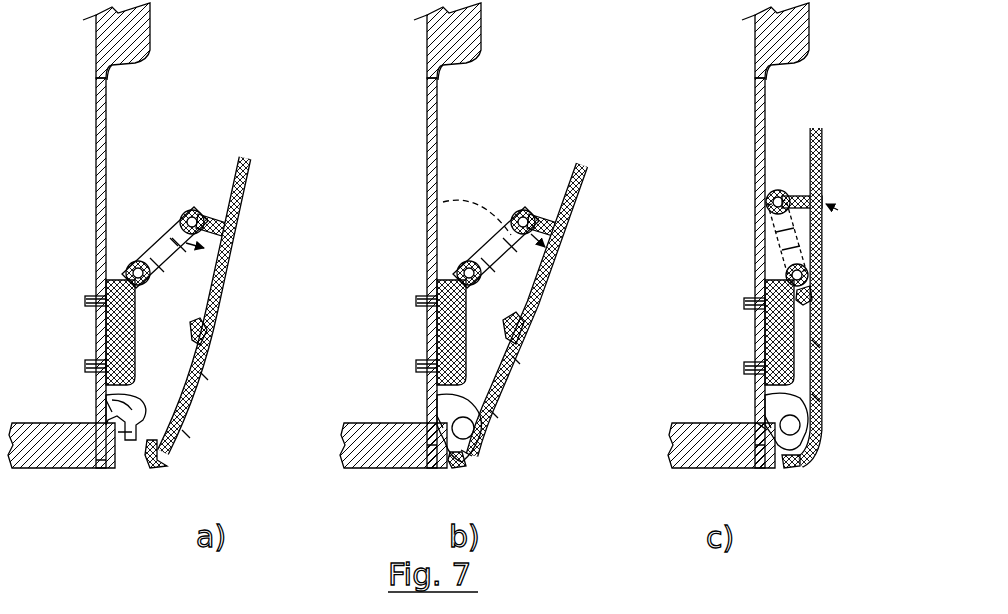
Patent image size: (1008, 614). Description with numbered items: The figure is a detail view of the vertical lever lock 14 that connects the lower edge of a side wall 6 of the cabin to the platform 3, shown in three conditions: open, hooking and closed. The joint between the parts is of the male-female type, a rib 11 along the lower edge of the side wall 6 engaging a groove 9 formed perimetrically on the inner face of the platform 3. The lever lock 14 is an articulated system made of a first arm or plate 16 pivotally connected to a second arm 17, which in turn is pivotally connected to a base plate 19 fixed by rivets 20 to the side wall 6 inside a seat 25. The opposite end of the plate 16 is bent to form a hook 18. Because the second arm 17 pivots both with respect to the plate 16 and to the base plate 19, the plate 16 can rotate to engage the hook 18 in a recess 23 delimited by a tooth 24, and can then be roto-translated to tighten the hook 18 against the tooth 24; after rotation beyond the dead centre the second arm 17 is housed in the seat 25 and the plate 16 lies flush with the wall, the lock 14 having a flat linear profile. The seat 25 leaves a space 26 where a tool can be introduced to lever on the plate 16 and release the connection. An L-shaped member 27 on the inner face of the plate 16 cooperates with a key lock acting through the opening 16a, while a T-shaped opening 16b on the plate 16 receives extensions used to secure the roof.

The platform 3 is at (50, 460).
The side wall 6 is at (148, 24).
The groove 9 is at (760, 450).
The rib 11 is at (106, 410).
The lever lock 14 is at (258, 152).
The first arm 16 is at (250, 178).
The opening 16a is at (200, 378).
The T-shaped opening 16b is at (185, 432).
The second arm 17 is at (155, 240).
The hook 18 is at (152, 470).
The base plate 19 is at (140, 333).
The rivets 20 is at (85, 298).
The recess 23 is at (125, 432).
The tooth 24 is at (144, 425).
The seat 25 is at (118, 222).
The space 26 is at (130, 90).
The L-shaped member 27 is at (215, 336).